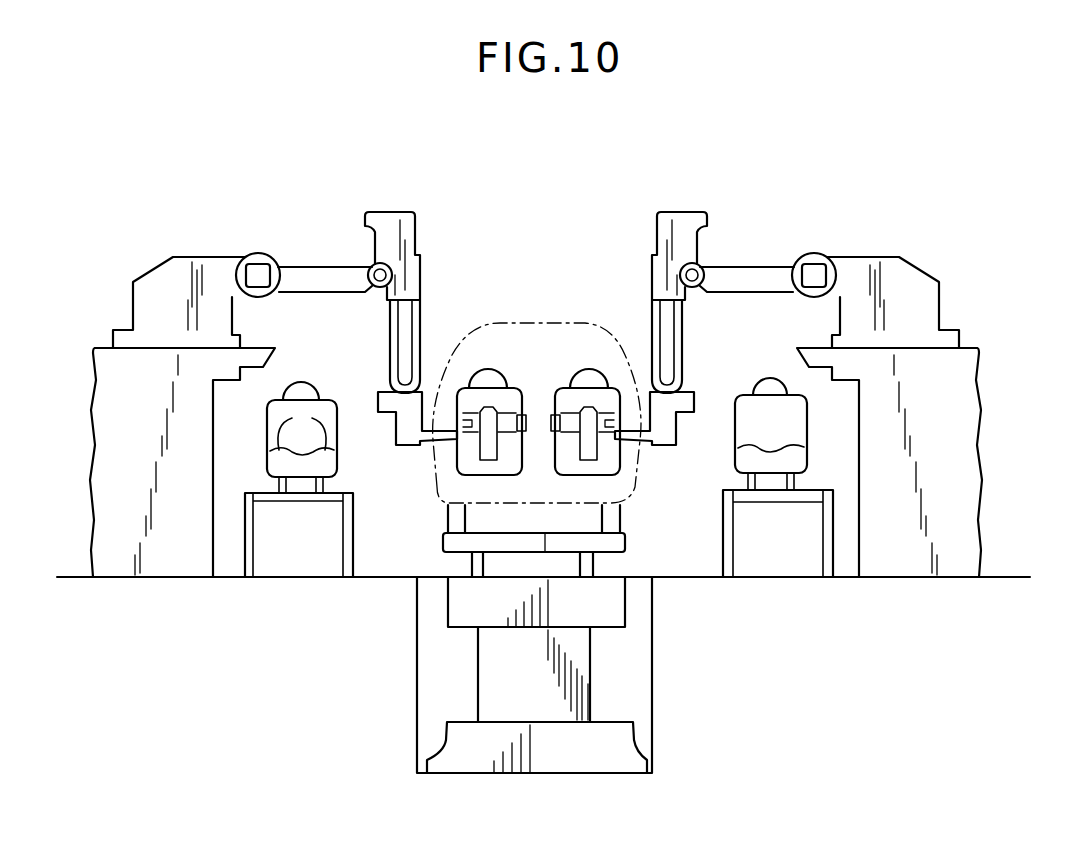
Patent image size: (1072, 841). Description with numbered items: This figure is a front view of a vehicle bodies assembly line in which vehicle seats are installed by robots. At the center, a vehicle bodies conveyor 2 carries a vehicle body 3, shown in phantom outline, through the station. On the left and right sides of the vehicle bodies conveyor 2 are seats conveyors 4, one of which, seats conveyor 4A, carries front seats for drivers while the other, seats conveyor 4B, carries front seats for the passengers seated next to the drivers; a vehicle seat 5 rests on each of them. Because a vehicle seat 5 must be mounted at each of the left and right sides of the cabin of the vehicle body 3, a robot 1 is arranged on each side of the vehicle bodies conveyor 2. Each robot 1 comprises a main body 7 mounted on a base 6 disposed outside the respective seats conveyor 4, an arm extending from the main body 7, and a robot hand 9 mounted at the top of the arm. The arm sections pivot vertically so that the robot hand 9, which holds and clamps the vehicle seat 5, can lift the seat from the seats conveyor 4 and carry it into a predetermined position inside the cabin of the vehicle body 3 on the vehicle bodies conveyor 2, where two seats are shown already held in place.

The robot 1 is at (153, 214).
The vehicle bodies conveyor 2 is at (626, 546).
The vehicle body 3 is at (503, 325).
The seats conveyor 4 is at (539, 533).
The seats conveyor 4A is at (297, 502).
The seats conveyor 4B is at (780, 497).
The vehicle seat 5 is at (298, 410).
The base 6 is at (110, 443).
The main body 7 is at (148, 300).
The robot hand 9 is at (389, 451).